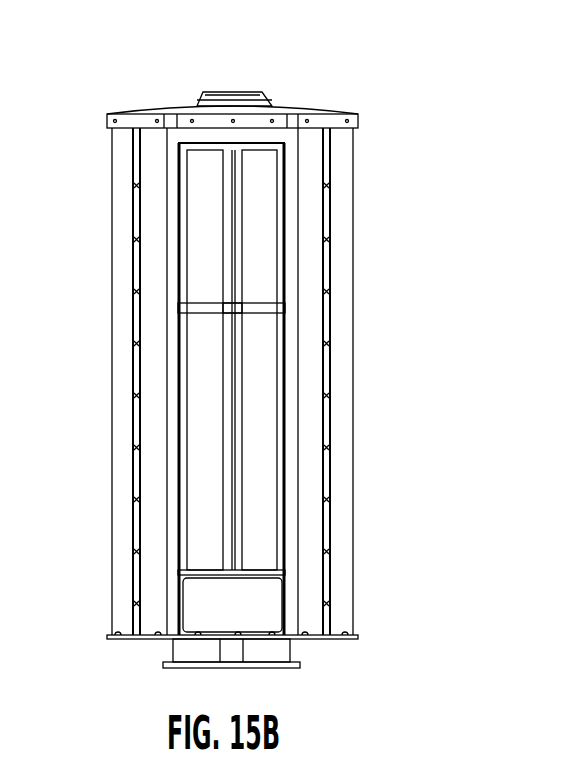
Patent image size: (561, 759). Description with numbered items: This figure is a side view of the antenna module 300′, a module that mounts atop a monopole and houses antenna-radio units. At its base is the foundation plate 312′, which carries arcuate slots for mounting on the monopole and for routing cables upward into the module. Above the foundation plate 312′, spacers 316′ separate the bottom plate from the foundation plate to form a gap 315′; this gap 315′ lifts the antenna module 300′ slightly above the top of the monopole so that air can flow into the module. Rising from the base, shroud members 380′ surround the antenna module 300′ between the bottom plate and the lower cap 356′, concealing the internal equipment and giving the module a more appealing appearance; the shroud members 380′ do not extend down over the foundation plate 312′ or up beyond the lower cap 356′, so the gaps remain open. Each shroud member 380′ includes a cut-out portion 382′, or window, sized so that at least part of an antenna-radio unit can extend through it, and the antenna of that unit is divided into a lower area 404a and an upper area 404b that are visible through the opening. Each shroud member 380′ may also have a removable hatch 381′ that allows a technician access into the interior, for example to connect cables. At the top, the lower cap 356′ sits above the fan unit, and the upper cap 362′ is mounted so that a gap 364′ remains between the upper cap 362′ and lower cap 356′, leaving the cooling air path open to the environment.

The antenna module 300′ is at (390, 65).
The lower cap 356′ is at (137, 113).
The upper cap 362′ is at (197, 100).
The gap 364′ is at (272, 100).
The shroud member 380′ is at (312, 498).
The cut-out portion 382′ is at (176, 336).
The lower area of antenna 404a is at (205, 233).
The upper area of antenna 404b is at (263, 370).
The removable hatch 381′ is at (208, 608).
The gap 315′ is at (307, 648).
The spacers 316′ is at (188, 650).
The foundation plate 312′ is at (280, 668).